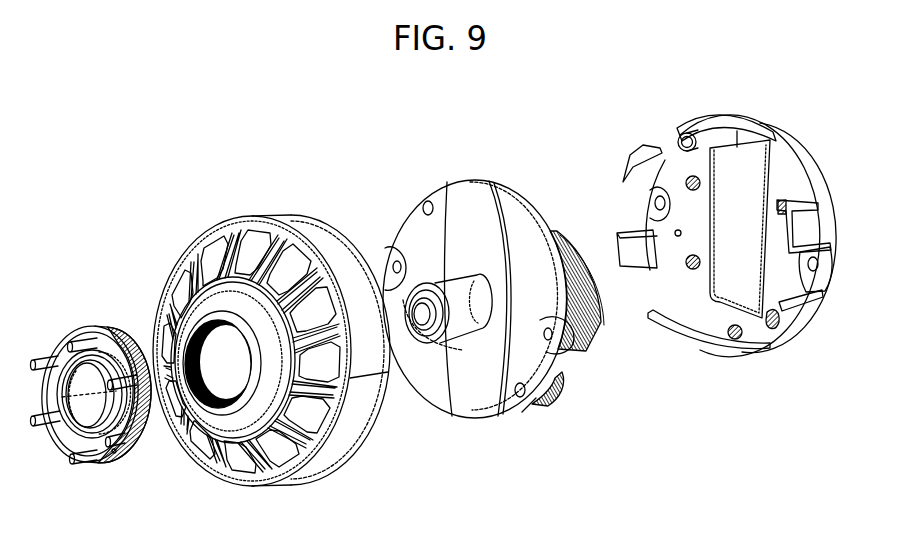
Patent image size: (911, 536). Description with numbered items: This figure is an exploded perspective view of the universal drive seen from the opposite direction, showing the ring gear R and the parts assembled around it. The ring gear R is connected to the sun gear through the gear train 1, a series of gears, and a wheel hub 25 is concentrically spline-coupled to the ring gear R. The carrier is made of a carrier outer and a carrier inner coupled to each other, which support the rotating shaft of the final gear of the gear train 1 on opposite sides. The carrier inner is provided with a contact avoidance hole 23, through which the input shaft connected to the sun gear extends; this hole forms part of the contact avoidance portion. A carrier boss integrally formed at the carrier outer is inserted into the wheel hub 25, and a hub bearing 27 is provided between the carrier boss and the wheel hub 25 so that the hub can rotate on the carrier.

The wheel hub 25 is at (62, 334).
The ring gear R is at (290, 228).
The gear train 1 is at (572, 241).
The contact avoidance hole 23 is at (727, 297).
The hub bearing 27 is at (462, 332).